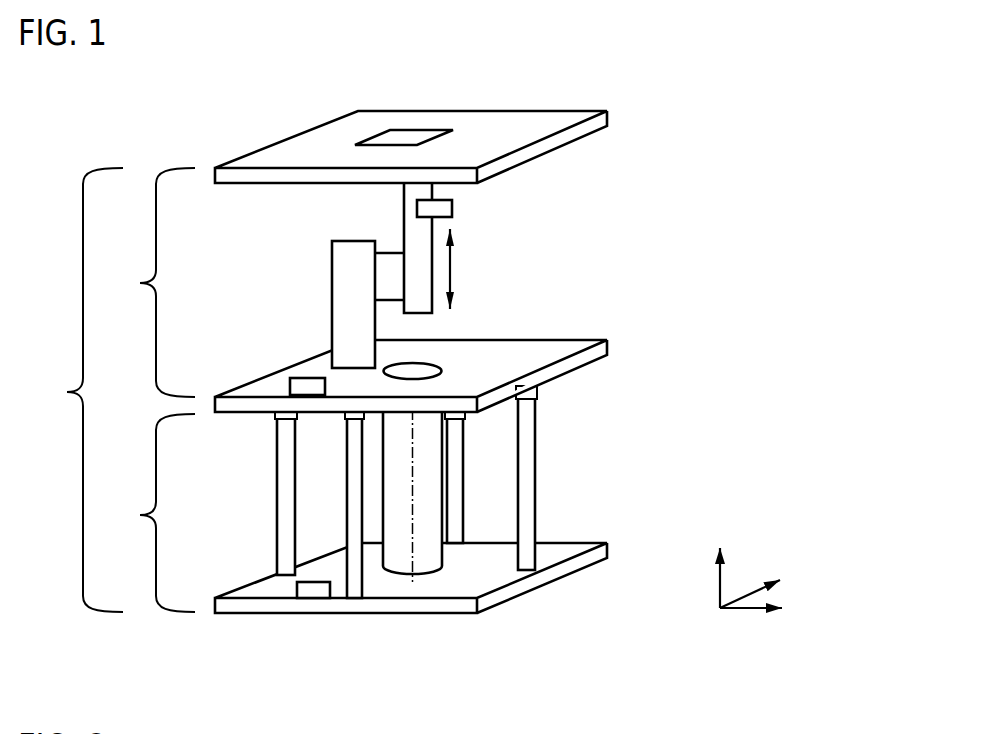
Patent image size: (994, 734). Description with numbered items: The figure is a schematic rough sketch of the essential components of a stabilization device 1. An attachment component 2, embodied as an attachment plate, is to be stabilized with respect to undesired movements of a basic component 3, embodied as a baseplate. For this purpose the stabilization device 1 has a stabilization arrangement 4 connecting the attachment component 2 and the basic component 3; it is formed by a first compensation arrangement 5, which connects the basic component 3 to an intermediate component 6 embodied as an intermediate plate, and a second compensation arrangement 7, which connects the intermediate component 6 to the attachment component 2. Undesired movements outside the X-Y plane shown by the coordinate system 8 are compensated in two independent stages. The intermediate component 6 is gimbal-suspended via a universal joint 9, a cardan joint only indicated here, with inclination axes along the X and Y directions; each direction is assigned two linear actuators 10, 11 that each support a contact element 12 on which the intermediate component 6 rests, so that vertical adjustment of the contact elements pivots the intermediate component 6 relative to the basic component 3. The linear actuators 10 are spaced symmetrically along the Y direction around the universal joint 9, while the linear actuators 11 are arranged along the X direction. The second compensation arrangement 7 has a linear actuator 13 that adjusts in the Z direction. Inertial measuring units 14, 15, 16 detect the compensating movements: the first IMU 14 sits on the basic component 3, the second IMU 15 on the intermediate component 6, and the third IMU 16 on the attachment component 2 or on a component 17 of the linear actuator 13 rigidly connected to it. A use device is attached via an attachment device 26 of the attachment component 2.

The stabilization device 1 is at (673, 150).
The attachment component 2 is at (310, 142).
The basic component 3 is at (487, 573).
The stabilization arrangement 4 is at (84, 390).
The first compensation arrangement 5 is at (157, 513).
The intermediate component 6 is at (545, 352).
The second compensation arrangement 7 is at (157, 282).
The coordinate system 8 is at (763, 545).
The universal joint 9 is at (427, 575).
The linear actuators 10 is at (453, 490).
The linear actuators 11 is at (288, 463).
The contact element 12 is at (347, 418).
The linear actuator 13 is at (332, 271).
The first inertial measuring unit 14 is at (313, 590).
The second inertial measuring unit 15 is at (307, 378).
The third inertial measuring unit 16 is at (453, 208).
The component of the linear actuator 17 is at (402, 215).
The attachment device 26 is at (417, 130).